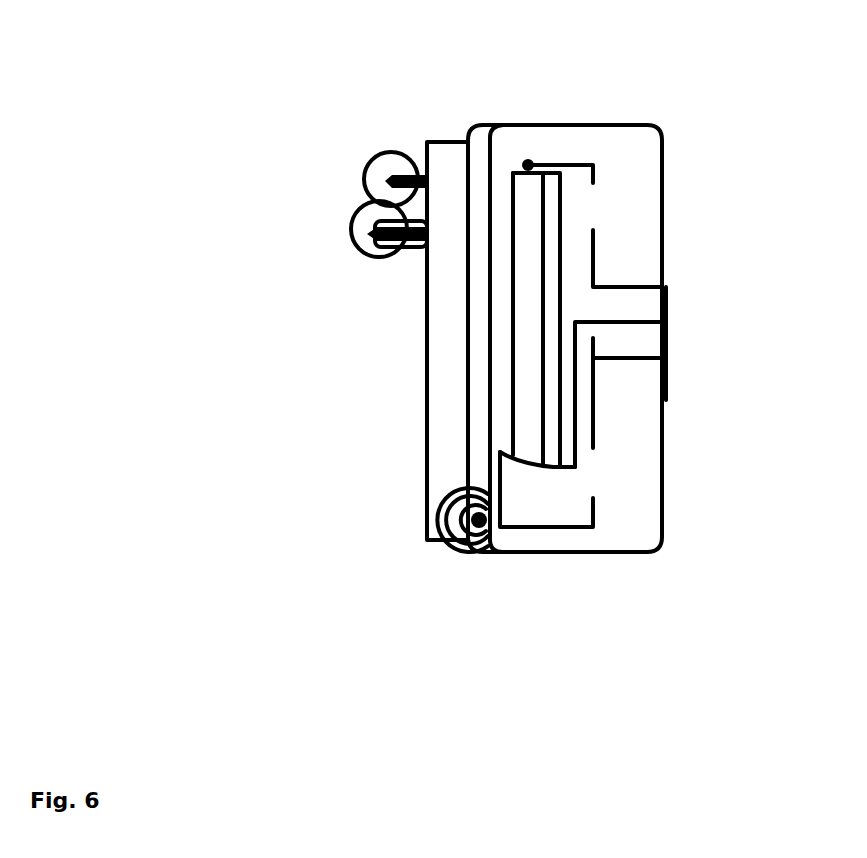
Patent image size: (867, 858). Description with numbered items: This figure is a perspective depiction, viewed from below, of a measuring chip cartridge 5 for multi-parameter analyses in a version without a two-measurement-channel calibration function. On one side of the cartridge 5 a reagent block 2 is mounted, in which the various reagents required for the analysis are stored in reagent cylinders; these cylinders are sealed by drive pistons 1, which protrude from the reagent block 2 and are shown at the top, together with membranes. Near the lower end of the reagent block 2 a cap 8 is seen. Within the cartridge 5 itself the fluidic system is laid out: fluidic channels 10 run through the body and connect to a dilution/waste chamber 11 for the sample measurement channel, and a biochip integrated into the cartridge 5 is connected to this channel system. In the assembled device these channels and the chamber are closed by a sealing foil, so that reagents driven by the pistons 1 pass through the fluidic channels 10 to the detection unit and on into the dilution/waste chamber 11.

The piston 1 is at (405, 253).
The reagent block 2 is at (422, 427).
The cartridge 5 is at (665, 508).
The cap 8 is at (443, 548).
The fluidic channels 10 is at (543, 532).
The dilution/waste chamber 11 is at (535, 188).